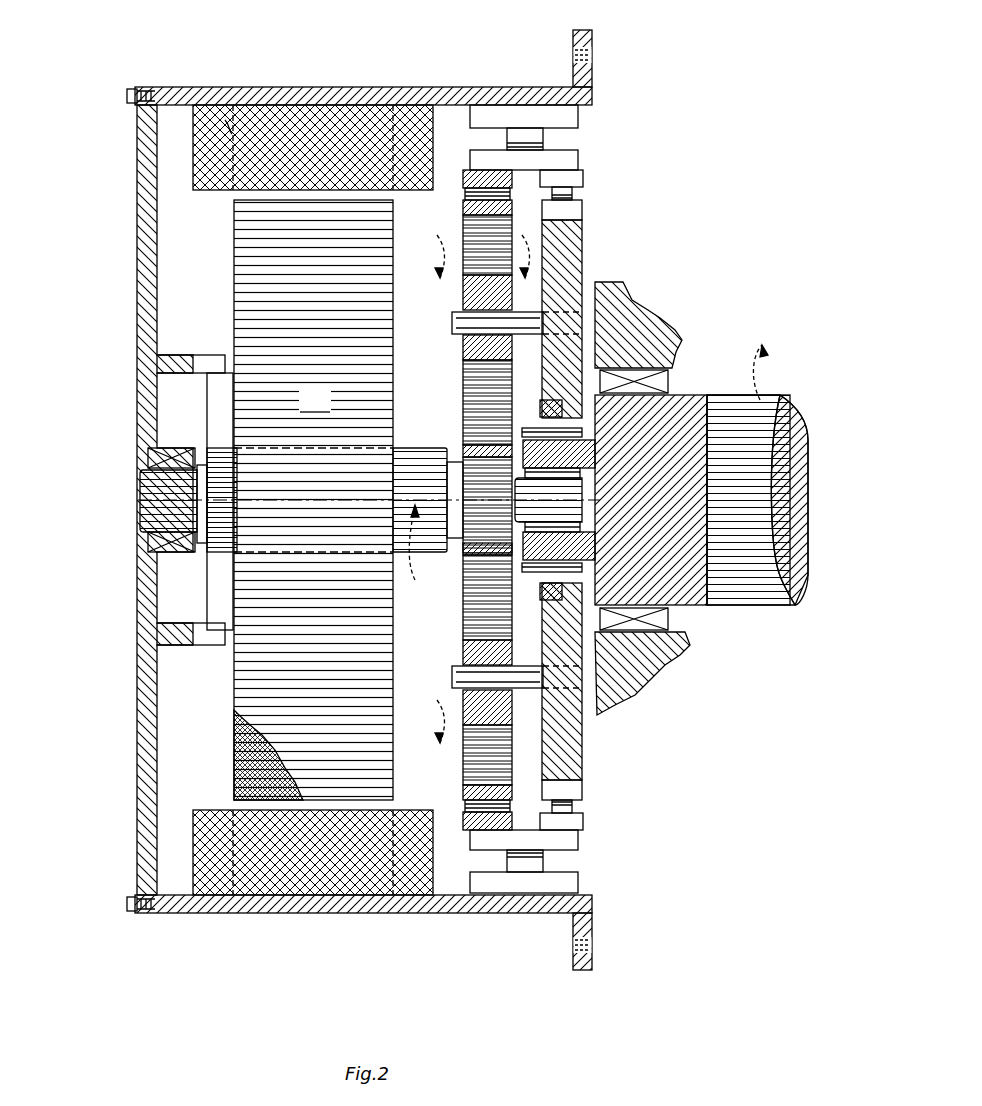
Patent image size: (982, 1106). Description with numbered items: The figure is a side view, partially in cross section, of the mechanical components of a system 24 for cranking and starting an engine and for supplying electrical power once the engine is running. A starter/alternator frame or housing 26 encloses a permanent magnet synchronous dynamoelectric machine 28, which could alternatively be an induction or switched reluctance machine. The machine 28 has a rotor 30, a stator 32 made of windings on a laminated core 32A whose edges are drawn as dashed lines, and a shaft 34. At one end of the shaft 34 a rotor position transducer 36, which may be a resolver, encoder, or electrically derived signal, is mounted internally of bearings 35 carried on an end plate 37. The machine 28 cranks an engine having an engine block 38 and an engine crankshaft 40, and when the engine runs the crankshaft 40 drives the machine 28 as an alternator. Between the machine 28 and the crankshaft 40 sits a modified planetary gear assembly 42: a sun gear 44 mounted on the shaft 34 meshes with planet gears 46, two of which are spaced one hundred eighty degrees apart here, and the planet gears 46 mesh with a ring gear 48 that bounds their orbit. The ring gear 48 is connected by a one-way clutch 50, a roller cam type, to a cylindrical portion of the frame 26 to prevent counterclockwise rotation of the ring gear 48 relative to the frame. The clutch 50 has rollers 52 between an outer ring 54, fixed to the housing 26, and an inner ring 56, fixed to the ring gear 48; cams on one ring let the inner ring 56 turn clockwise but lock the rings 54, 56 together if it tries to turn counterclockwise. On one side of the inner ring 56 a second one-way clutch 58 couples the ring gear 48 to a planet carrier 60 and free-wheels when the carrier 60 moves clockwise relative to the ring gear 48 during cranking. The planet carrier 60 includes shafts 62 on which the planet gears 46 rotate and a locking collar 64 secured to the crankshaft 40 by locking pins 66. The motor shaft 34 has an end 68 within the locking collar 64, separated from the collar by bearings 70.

The system 24 is at (412, 15).
The starter/alternator frame or housing 26 is at (330, 915).
The permanent magnet synchronous dynamoelectric machine 28 is at (228, 748).
The rotor 30 is at (330, 412).
The stator 32 is at (330, 149).
The laminated core 32A is at (230, 133).
The shaft 34 is at (435, 450).
The bearings 35 is at (148, 460).
The rotor position transducer 36 is at (217, 378).
The end plate 37 is at (137, 200).
The engine block 38 is at (662, 332).
The engine crankshaft 40 is at (770, 400).
The modified planetary gear assembly 42 is at (588, 742).
The sun gear 44 is at (463, 550).
The planet gears 46 is at (465, 375).
The ring gear 48 is at (465, 178).
The one-way clutch 50 is at (595, 105).
The rollers 52 is at (518, 130).
The outer ring 54 is at (560, 112).
The inner ring 56 is at (562, 150).
The second one-way clutch 58 is at (595, 170).
The planet carrier 60 is at (583, 262).
The shafts 62 is at (458, 318).
The locking collar 64 is at (537, 583).
The locking pins 66 is at (590, 428).
The end 68 is at (585, 512).
The bearings 70 is at (585, 485).